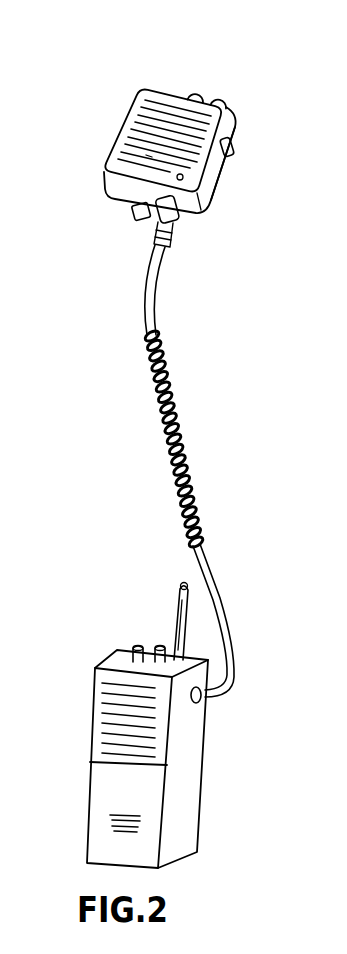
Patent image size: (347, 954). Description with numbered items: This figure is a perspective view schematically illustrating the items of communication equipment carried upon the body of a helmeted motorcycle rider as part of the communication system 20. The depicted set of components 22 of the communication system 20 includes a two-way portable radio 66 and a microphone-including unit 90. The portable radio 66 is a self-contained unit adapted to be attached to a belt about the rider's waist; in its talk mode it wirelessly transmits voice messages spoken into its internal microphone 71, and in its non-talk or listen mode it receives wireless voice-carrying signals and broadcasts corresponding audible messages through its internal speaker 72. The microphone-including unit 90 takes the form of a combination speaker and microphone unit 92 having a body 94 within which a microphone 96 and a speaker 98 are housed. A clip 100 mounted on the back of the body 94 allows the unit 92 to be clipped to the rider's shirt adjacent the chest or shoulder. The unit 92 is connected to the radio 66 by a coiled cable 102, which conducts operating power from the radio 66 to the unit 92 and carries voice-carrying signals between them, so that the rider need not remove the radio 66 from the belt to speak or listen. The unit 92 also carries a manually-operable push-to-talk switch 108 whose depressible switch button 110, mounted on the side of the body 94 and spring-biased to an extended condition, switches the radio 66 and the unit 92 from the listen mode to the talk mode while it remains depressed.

The communication system 20 is at (258, 77).
The set of components carried by the rider 22 is at (212, 85).
The two-way portable radio 66 is at (183, 740).
The internal microphone 71 is at (113, 822).
The internal speaker 72 is at (110, 717).
The microphone-including unit 90 is at (129, 112).
The combination speaker and microphone unit 92 is at (215, 200).
The body 94 is at (215, 173).
The microphone 96 is at (148, 157).
The speaker 98 is at (160, 132).
The clip 100 is at (132, 218).
The cable 102 is at (183, 388).
The push-to-talk switch 108 is at (233, 150).
The switch button 110 is at (237, 128).